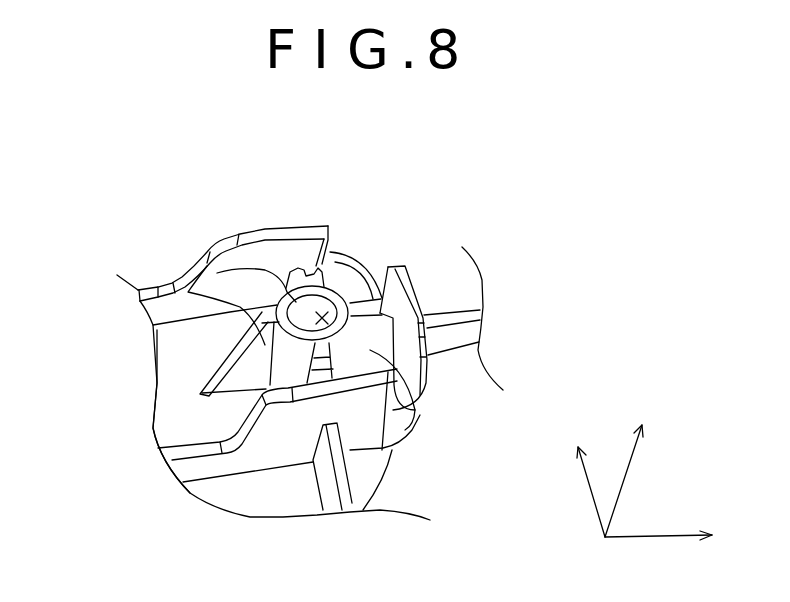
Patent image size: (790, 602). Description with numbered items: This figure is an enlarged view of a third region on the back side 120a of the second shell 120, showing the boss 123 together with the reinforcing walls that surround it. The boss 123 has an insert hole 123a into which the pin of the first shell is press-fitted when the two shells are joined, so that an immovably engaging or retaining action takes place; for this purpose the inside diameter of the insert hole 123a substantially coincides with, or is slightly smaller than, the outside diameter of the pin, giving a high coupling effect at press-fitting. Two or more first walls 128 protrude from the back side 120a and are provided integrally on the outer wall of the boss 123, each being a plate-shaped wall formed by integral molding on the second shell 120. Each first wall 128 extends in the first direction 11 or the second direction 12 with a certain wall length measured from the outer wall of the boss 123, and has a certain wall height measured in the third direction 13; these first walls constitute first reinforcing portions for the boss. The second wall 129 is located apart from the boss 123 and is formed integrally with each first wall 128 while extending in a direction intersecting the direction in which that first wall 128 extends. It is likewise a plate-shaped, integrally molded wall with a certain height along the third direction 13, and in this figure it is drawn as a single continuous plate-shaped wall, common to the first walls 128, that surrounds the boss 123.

The second shell 120 is at (433, 240).
The back side 120a is at (175, 377).
The boss 123 is at (321, 288).
The insert hole 123a is at (350, 295).
The first wall 128 is at (199, 296).
The second wall 129 is at (418, 303).
The first direction 11 is at (669, 552).
The second direction 12 is at (575, 481).
The third direction 13 is at (641, 472).